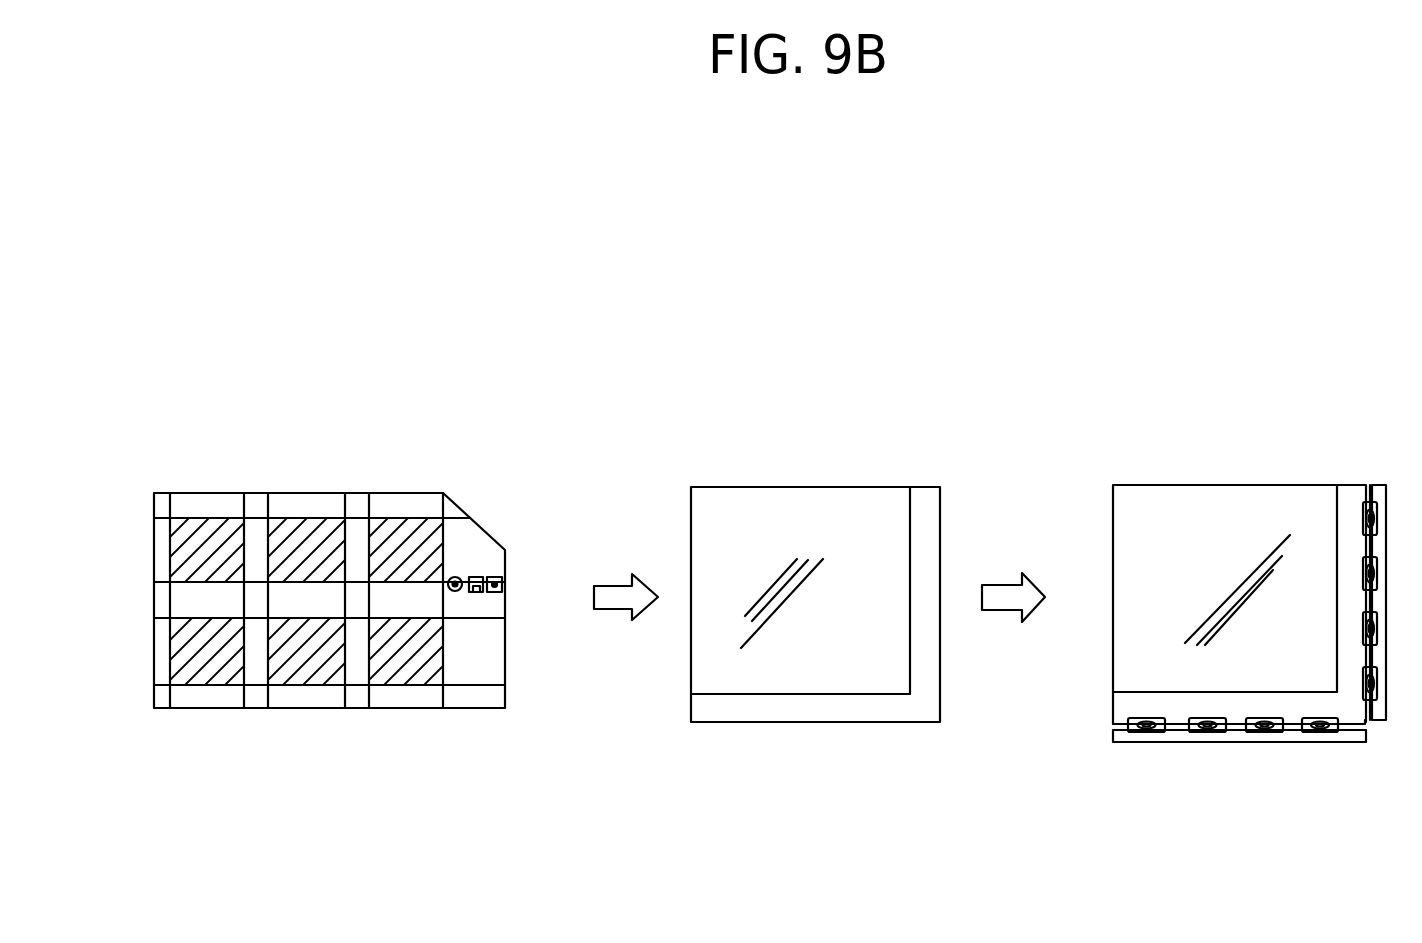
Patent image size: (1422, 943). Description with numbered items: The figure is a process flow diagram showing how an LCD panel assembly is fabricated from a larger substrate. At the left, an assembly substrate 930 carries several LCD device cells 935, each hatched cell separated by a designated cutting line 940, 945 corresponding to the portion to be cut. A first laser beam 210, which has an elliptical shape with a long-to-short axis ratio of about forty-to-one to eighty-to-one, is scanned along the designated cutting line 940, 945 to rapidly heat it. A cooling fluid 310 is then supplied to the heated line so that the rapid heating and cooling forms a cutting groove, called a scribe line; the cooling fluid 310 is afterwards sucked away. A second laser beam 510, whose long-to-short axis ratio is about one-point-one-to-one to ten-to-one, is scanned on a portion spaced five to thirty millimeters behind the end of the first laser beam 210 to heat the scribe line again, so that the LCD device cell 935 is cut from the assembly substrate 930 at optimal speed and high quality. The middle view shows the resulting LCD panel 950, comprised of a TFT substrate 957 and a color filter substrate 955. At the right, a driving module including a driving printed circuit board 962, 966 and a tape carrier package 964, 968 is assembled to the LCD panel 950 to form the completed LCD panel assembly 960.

The assembly substrate 930 is at (380, 535).
The designated cutting line 945 is at (163, 515).
The designated cutting line 940 is at (177, 493).
The LCD device cell 935 is at (400, 522).
The first laser beam 210 is at (461, 580).
The second laser beam 510 is at (504, 578).
The cooling fluid 310 is at (478, 592).
The LCD panel 950 is at (818, 458).
The color filter substrate 955 is at (695, 677).
The TFT substrate 957 is at (739, 718).
The LCD panel assembly 960 is at (1255, 536).
The driving printed circuit board 962 is at (1378, 487).
The tape carrier package 964 is at (1363, 488).
The driving printed circuit board 966 is at (1315, 733).
The tape carrier package 968 is at (1192, 733).